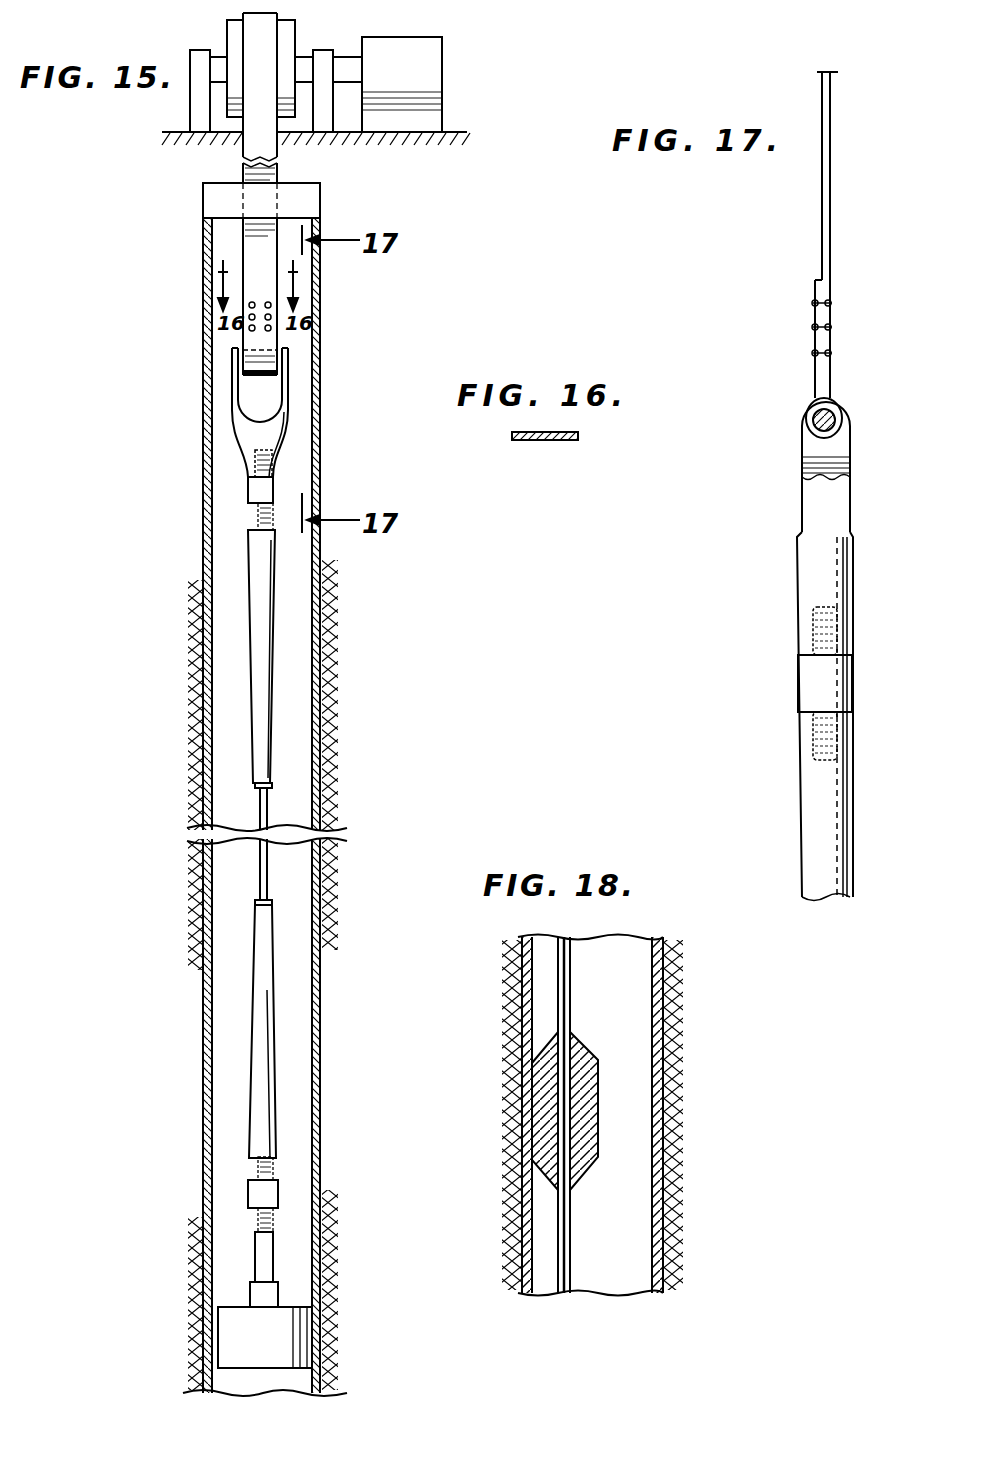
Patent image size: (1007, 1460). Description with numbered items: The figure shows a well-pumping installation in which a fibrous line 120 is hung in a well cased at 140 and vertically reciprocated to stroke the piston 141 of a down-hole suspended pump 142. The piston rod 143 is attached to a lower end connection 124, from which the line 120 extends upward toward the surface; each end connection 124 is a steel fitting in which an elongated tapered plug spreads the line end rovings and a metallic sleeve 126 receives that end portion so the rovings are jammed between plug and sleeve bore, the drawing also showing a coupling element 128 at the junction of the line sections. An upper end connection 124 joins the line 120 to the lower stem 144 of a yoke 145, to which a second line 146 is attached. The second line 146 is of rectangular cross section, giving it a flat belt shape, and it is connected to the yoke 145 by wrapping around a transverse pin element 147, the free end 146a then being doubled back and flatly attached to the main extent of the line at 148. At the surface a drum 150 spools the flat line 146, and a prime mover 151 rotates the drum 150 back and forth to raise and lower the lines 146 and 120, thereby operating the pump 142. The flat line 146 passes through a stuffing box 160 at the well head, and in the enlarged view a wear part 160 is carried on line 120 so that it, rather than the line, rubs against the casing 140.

In FIG. 15, the line 120 is at (270, 802).
In FIG. 18, the line 120 is at (565, 977).
In FIG. 15, the end connection 124 is at (245, 670).
In FIG. 17, the end connection 124 is at (790, 797).
In FIG. 15, the metallic sleeve 126 is at (263, 602).
In FIG. 17, the metallic sleeve 126 is at (822, 838).
In FIG. 15, the coupling 128 is at (255, 490).
In FIG. 17, the coupling 128 is at (807, 673).
In FIG. 15, the casing 140 is at (210, 760).
In FIG. 18, the casing 140 is at (657, 1237).
In FIG. 15, the piston 141 is at (250, 1292).
In FIG. 15, the down-hole suspended pump 142 is at (277, 1335).
In FIG. 15, the piston rod 143 is at (268, 1248).
In FIG. 15, the lower stem 144 is at (270, 441).
In FIG. 17, the lower stem 144 is at (827, 575).
In FIG. 15, the yoke 145 is at (237, 447).
In FIG. 17, the yoke 145 is at (795, 527).
In FIG. 15, the second line 146 is at (253, 33).
In FIG. 16, the second line 146 is at (543, 441).
In FIG. 17, the second line 146 is at (832, 183).
In FIG. 15, the free end 146a is at (252, 330).
In FIG. 17, the free end 146a is at (817, 313).
In FIG. 15, the transverse pin element 147 is at (279, 363).
In FIG. 17, the transverse pin element 147 is at (813, 427).
In FIG. 17, the attachment 148 is at (805, 292).
In FIG. 15, the drum 150 is at (288, 34).
In FIG. 15, the prime mover 151 is at (432, 60).
In FIG. 15, the stuffing box / wear part 160 is at (212, 196).
In FIG. 18, the stuffing box / wear part 160 is at (582, 1105).